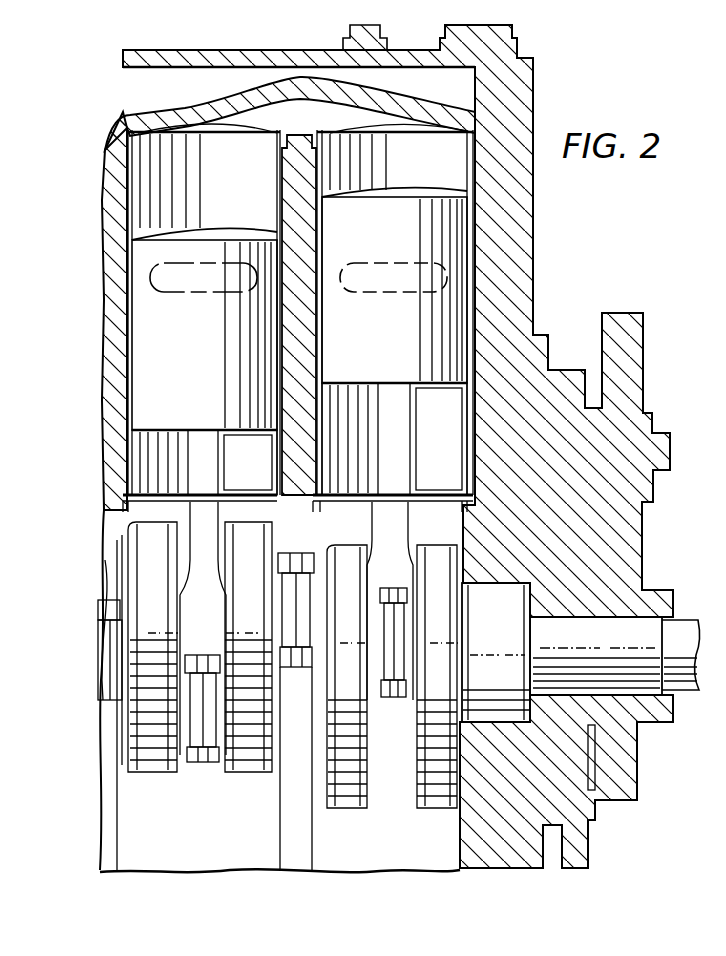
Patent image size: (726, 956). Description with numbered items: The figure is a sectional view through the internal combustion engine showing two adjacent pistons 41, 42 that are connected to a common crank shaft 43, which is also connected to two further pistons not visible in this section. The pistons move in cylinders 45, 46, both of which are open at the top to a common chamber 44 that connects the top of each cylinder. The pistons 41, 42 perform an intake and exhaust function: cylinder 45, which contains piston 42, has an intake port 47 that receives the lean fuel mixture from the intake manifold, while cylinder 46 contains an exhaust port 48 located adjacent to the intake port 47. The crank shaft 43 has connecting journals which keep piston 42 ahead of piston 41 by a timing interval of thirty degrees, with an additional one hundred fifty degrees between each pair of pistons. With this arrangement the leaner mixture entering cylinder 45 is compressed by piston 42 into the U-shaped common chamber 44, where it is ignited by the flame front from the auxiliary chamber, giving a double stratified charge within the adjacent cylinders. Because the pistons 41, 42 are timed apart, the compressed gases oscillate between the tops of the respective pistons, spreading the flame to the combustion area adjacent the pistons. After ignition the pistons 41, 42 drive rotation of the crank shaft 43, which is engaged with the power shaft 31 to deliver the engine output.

The power shaft 31 is at (685, 623).
The piston 41 is at (362, 362).
The piston 42 is at (168, 395).
The crank shaft 43 is at (436, 562).
The common chamber 44 is at (308, 125).
The cylinder 45 is at (263, 164).
The cylinder 46 is at (446, 164).
The intake port 47 is at (186, 294).
The exhaust port 48 is at (384, 294).